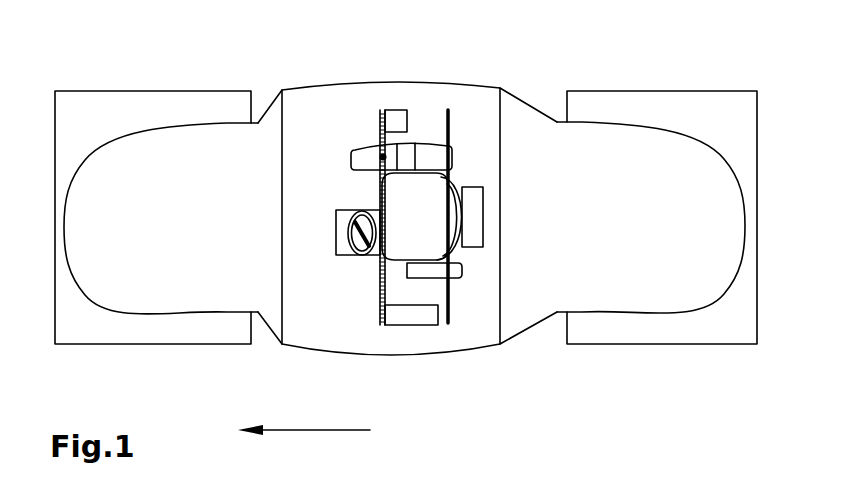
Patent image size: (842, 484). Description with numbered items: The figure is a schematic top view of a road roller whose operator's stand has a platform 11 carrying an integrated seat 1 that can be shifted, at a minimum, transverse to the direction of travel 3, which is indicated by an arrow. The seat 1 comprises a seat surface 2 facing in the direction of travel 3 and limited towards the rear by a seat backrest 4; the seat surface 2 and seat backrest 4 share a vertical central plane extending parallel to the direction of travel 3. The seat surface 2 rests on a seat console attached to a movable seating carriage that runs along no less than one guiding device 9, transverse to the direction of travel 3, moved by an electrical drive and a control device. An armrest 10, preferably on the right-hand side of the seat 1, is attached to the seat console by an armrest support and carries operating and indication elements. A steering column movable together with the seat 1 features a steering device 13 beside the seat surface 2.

The seat 1 is at (399, 298).
The seat surface 2 is at (424, 228).
The direction of travel 3 is at (302, 430).
The seat backrest 4 is at (458, 214).
The guiding device 9 is at (449, 117).
The armrest 10 is at (412, 158).
The platform 11 is at (333, 307).
The steering device 13 is at (349, 233).